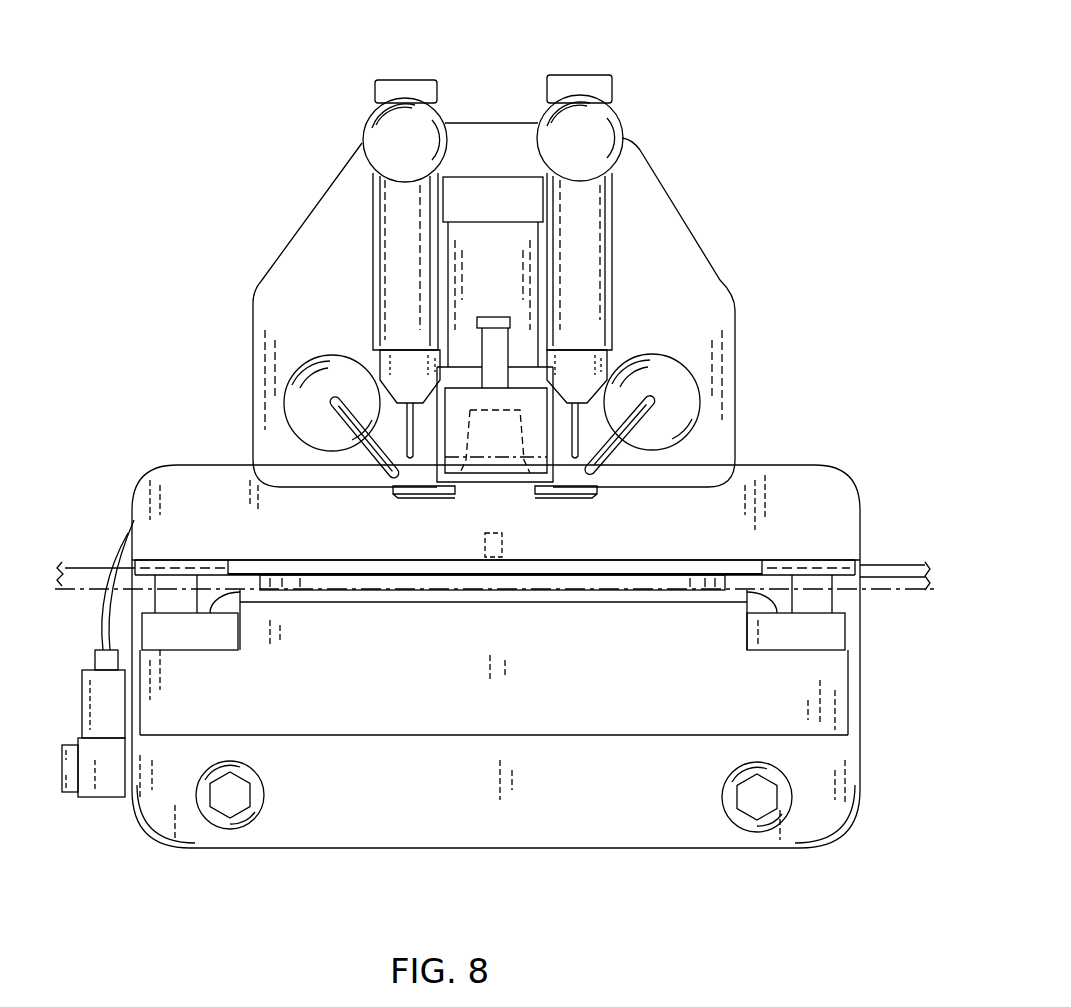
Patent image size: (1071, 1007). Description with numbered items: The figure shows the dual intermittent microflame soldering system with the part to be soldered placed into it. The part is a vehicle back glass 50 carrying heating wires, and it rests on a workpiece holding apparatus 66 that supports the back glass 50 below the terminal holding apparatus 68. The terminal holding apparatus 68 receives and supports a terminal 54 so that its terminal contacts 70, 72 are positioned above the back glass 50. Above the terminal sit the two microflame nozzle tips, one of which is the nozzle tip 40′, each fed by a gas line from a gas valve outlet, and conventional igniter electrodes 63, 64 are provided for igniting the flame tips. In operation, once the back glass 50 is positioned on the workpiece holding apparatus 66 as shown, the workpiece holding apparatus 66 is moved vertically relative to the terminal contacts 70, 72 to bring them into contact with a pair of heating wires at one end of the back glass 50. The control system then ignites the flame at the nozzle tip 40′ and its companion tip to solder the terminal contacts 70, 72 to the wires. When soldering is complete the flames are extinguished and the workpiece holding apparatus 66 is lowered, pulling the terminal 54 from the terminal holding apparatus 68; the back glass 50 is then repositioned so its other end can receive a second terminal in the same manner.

The microflame nozzle tip 40′ is at (578, 427).
The back glass 50 is at (902, 566).
The terminal 54 is at (520, 438).
The igniter electrode 63 is at (693, 432).
The igniter electrode 64 is at (350, 467).
The workpiece holding apparatus 66 is at (805, 673).
The terminal holding apparatus 68 is at (583, 470).
The terminal contact 70 is at (572, 493).
The terminal contact 72 is at (420, 493).